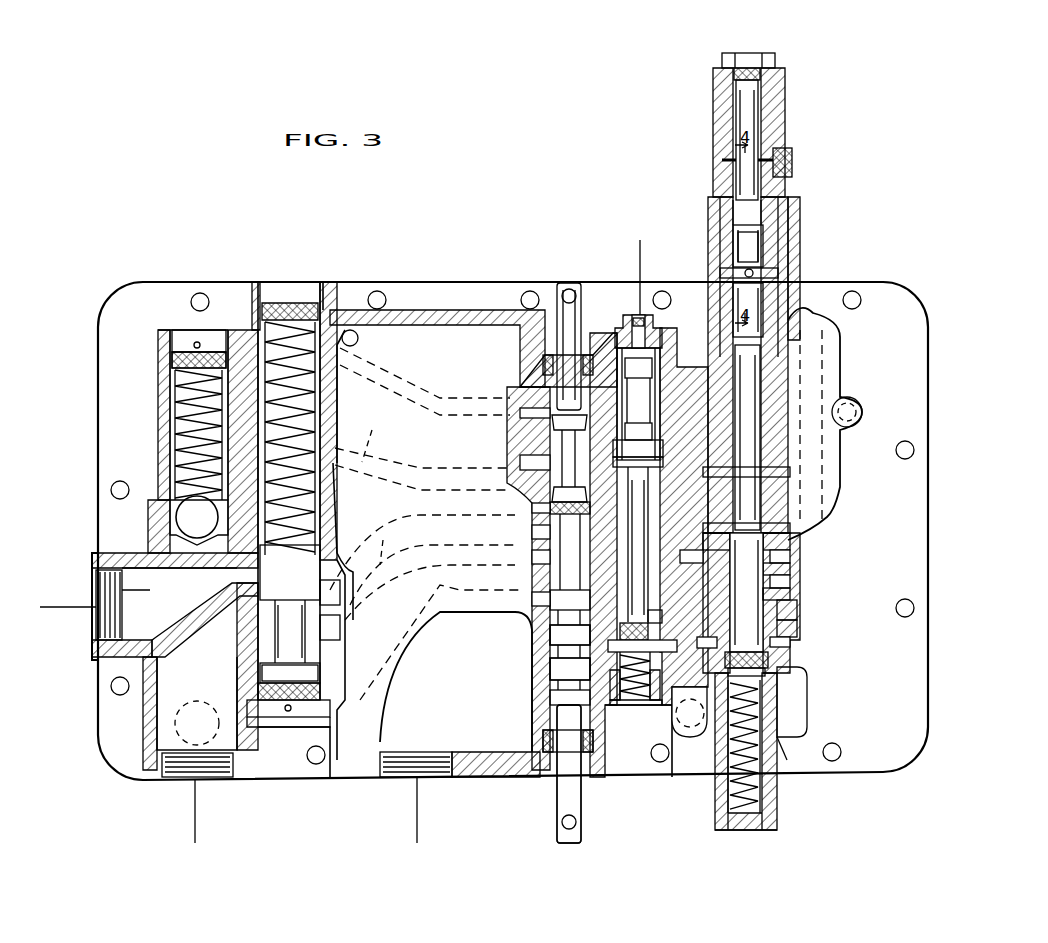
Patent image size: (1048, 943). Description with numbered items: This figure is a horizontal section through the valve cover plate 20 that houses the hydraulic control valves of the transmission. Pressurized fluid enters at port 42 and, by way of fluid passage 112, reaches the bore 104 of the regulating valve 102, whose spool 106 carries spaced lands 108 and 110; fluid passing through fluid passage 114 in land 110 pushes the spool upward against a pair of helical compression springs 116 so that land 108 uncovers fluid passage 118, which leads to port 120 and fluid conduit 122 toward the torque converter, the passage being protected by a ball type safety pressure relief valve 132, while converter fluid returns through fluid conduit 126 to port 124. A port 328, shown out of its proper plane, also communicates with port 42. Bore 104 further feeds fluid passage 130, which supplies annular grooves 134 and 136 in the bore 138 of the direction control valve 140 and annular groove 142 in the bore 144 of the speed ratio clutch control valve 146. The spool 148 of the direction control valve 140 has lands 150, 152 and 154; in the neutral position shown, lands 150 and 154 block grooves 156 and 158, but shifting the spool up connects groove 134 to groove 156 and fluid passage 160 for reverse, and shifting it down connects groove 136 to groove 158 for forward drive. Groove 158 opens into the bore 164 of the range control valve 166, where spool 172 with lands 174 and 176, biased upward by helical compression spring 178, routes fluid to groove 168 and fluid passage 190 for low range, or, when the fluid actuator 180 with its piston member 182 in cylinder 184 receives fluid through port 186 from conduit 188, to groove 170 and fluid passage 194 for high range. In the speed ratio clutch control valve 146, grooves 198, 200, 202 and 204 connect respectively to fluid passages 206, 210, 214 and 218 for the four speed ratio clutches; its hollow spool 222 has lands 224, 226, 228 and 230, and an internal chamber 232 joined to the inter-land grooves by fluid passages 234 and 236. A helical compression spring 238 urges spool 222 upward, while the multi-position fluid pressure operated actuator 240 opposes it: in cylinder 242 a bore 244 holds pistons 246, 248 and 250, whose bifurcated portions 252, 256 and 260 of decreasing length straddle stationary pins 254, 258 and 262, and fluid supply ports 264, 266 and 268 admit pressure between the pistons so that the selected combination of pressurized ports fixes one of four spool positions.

The cover plate 20 is at (918, 543).
The port 42 is at (172, 770).
The regulating valve 102 is at (340, 545).
The bore 104 is at (325, 403).
The spool 106 is at (318, 643).
The land 108 is at (290, 614).
The land 110 is at (258, 691).
The fluid passage 112 is at (240, 620).
The fluid passage 114 is at (262, 670).
The helical compression springs 116 is at (287, 300).
The fluid passage 118 is at (248, 592).
The port 120 is at (95, 568).
The fluid conduit 122 is at (70, 618).
The port 124 is at (445, 778).
The fluid conduit 126 is at (417, 824).
The fluid passage 130 is at (422, 552).
The safety pressure relief valve 132 is at (178, 500).
The annular groove 134 is at (530, 457).
The annular groove 136 is at (532, 530).
The bore 138 is at (532, 558).
The direction control valve 140 is at (595, 740).
The annular groove 142 is at (795, 558).
The bore 144 is at (792, 597).
The speed ratio clutch control valve 146 is at (798, 637).
The spool 148 is at (582, 788).
The land 150 is at (545, 377).
The land 152 is at (530, 501).
The land 154 is at (532, 600).
The groove 156 is at (530, 405).
The groove 158 is at (550, 638).
The fluid passage 160 is at (425, 403).
The bore 164 is at (662, 627).
The range control valve 166 is at (655, 507).
The groove 168 is at (615, 457).
The groove 170 is at (670, 642).
The spool 172 is at (652, 532).
The land 174 is at (655, 437).
The land 176 is at (548, 667).
The helical compression spring 178 is at (636, 706).
The fluid actuator 180 is at (598, 337).
The piston member 182 is at (650, 384).
The cylinder 184 is at (628, 314).
The port 186 is at (645, 316).
The conduit 188 is at (640, 290).
The fluid passage 190 is at (665, 470).
The fluid passage 194 is at (689, 730).
The groove 198 is at (798, 647).
The groove 200 is at (795, 584).
The groove 202 is at (838, 513).
The groove 204 is at (792, 474).
The fluid passage 206 is at (800, 702).
The fluid passage 210 is at (462, 614).
The fluid passage 214 is at (420, 563).
The fluid passage 218 is at (422, 441).
The spool 222 is at (800, 717).
The land 224 is at (805, 677).
The land 226 is at (800, 612).
The land 228 is at (793, 570).
The land 230 is at (790, 542).
The chamber 232 is at (744, 592).
The fluid passage 234 is at (725, 662).
The fluid passage 236 is at (725, 562).
The helical compression spring 238 is at (765, 812).
The multi-position fluid pressure operated actuator 240 is at (792, 192).
The cylinder 242 is at (715, 102).
The bore 244 is at (733, 216).
The piston 246 is at (800, 372).
The piston 248 is at (790, 230).
The piston 250 is at (775, 102).
The bifurcated portion 252 is at (762, 462).
The stationary pin 254 is at (795, 434).
The bifurcated portion 256 is at (790, 283).
The pin 258 is at (772, 271).
The bifurcated portion 260 is at (794, 157).
The stationary pin 262 is at (718, 161).
The fluid supply port 264 is at (708, 260).
The fluid supply port 266 is at (713, 187).
The fluid supply port 268 is at (722, 51).
The port 328 is at (180, 732).